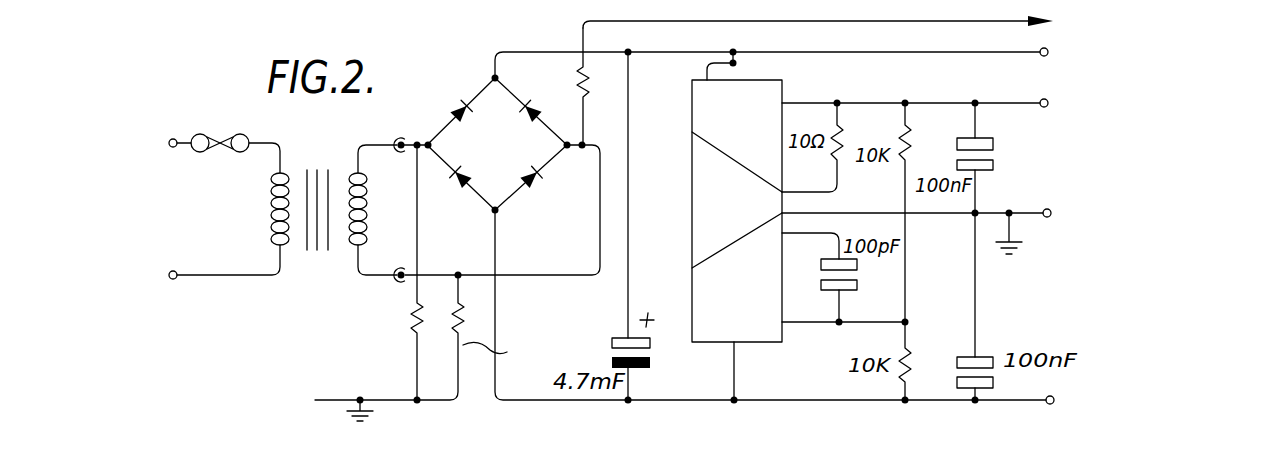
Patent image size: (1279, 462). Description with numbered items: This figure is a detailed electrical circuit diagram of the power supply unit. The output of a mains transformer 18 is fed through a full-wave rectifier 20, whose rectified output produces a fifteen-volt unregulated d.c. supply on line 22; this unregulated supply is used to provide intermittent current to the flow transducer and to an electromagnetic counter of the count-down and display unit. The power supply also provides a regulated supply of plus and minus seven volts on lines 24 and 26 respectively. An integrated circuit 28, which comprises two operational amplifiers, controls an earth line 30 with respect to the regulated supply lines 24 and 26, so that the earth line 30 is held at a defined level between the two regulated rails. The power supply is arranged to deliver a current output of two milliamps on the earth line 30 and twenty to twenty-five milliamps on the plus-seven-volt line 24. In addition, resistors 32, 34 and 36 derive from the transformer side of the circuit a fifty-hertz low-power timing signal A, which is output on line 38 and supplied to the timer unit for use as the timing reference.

The mains transformer 18 is at (313, 266).
The full-wave rectifier 20 is at (514, 161).
The line 22 is at (920, 52).
The line 24 is at (1008, 101).
The line 26 is at (1008, 381).
The integrated circuit 28 is at (692, 212).
The earth line 30 is at (1033, 213).
The resistor 32 is at (411, 306).
The resistor 34 is at (465, 303).
The resistor 36 is at (577, 80).
The line 38 is at (910, 22).